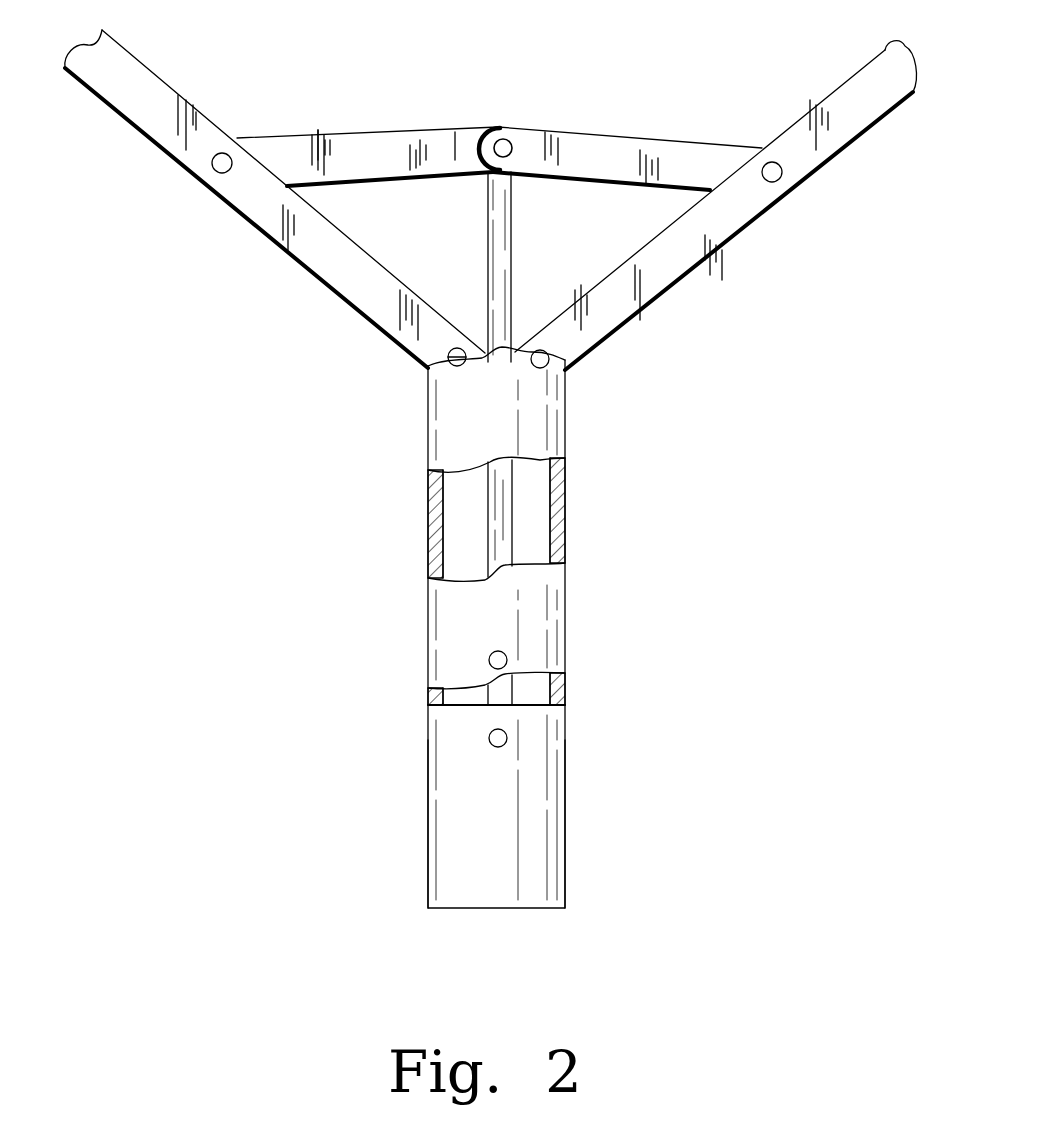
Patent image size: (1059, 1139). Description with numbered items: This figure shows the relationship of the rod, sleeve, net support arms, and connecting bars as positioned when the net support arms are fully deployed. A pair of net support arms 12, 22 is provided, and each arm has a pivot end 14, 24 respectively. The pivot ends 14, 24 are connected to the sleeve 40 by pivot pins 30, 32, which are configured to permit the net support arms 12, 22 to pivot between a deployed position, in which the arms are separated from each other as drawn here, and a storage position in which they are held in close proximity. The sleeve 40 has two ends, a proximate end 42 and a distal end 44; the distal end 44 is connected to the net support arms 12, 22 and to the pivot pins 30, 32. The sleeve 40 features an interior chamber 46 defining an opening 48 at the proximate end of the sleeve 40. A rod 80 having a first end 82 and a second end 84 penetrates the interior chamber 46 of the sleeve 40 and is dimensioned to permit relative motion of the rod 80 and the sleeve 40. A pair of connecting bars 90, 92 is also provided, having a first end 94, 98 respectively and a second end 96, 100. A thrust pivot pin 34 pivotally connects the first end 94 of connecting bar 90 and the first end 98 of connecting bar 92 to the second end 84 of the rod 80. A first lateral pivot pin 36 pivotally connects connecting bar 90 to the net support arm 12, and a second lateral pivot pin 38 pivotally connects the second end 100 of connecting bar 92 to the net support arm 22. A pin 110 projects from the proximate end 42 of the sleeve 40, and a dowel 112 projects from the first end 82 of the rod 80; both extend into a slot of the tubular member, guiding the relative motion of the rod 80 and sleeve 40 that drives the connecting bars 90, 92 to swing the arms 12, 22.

The net support arm 12 is at (278, 228).
The pivot end 14 is at (378, 347).
The net support arm 22 is at (865, 75).
The pivot end 24 is at (622, 346).
The pivot pin 30 is at (425, 366).
The pivot pin 32 is at (548, 362).
The thrust pivot pin 34 is at (503, 140).
The first lateral pivot pin 36 is at (218, 172).
The second lateral pivot pin 38 is at (775, 180).
The sleeve 40 is at (489, 627).
The proximate end 42 is at (566, 622).
The distal end 44 is at (566, 440).
The interior chamber 46 is at (500, 498).
The opening 48 is at (497, 333).
The rod 80 is at (500, 695).
The first end 82 is at (530, 843).
The second end 84 is at (505, 262).
The connecting bar 90 is at (370, 140).
The connecting bar 92 is at (598, 142).
The first end 94 is at (435, 112).
The second end 96 is at (246, 124).
The first end 98 is at (548, 108).
The second end 100 is at (762, 130).
The pin 110 is at (489, 660).
The dowel 112 is at (489, 738).